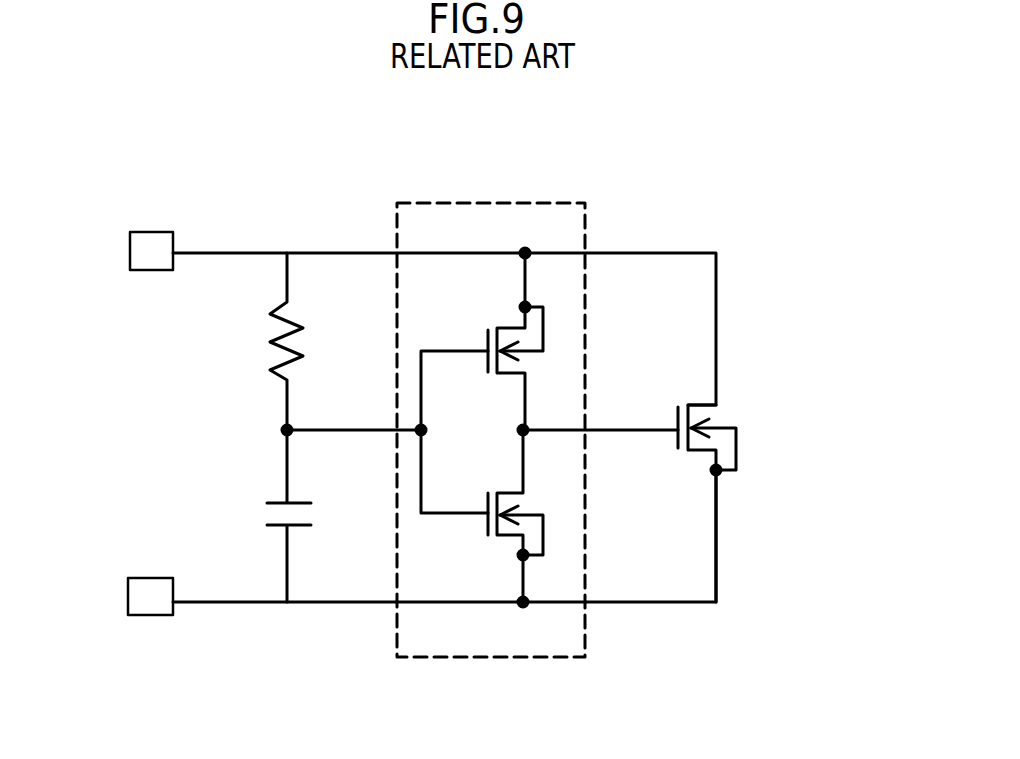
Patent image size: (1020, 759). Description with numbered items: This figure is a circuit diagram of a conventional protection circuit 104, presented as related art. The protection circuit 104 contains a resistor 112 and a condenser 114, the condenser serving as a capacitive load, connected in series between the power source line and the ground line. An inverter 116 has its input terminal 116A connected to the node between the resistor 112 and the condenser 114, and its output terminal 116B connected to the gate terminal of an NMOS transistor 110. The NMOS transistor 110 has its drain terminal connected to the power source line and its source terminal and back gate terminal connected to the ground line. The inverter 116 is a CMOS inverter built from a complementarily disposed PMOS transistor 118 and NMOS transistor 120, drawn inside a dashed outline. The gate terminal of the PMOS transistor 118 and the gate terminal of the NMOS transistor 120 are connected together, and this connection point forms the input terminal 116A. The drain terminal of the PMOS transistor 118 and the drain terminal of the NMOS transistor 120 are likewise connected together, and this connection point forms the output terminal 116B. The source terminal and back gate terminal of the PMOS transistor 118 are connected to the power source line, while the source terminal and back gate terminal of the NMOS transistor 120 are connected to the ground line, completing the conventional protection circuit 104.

The protection circuit 104 is at (764, 182).
The NMOS transistor 110 is at (756, 418).
The resistor 112 is at (343, 300).
The condenser 114 is at (340, 478).
The inverter 116 is at (516, 201).
The input terminal 116A is at (421, 430).
The output terminal 116B is at (523, 428).
The PMOS transistor 118 is at (556, 318).
The NMOS transistor 120 is at (557, 522).